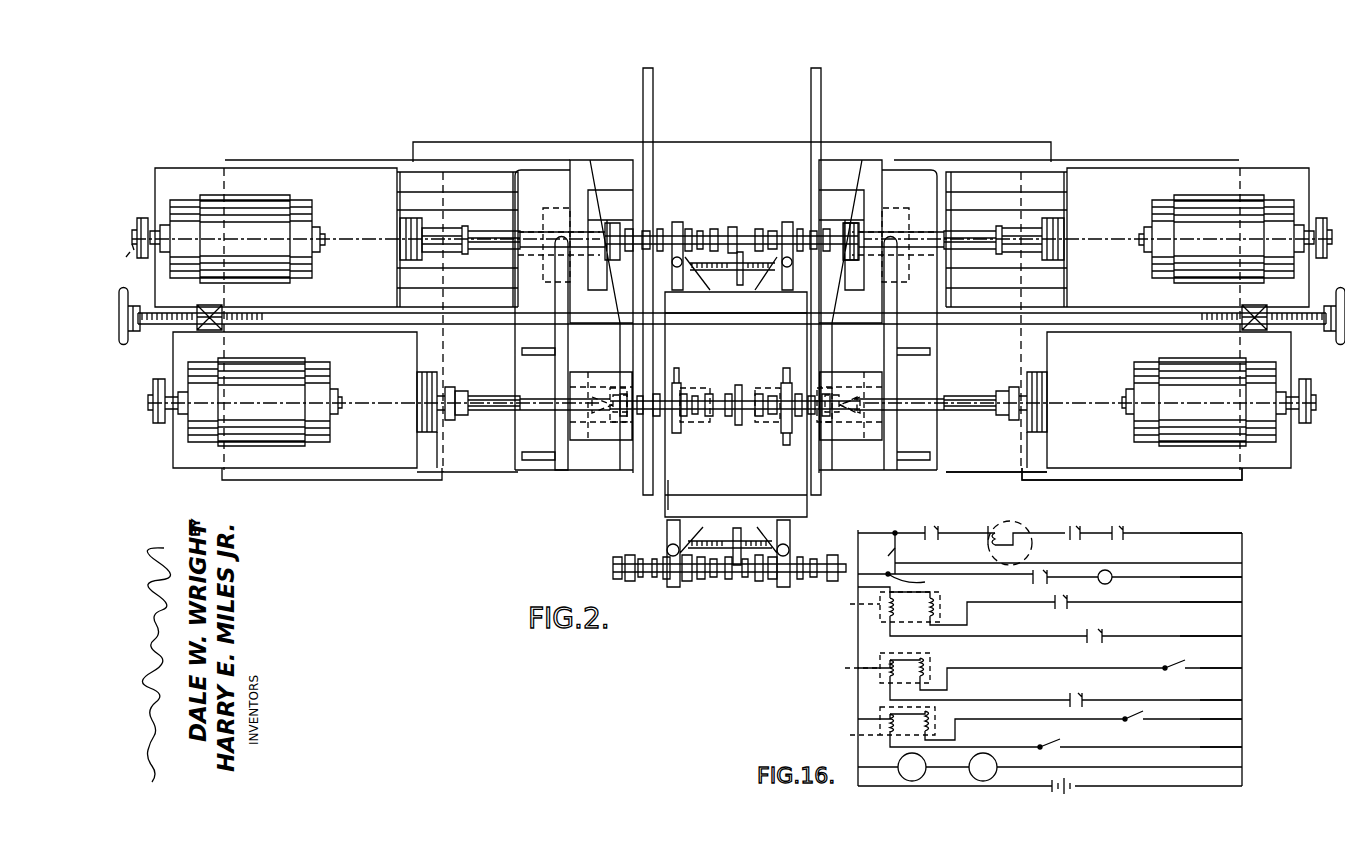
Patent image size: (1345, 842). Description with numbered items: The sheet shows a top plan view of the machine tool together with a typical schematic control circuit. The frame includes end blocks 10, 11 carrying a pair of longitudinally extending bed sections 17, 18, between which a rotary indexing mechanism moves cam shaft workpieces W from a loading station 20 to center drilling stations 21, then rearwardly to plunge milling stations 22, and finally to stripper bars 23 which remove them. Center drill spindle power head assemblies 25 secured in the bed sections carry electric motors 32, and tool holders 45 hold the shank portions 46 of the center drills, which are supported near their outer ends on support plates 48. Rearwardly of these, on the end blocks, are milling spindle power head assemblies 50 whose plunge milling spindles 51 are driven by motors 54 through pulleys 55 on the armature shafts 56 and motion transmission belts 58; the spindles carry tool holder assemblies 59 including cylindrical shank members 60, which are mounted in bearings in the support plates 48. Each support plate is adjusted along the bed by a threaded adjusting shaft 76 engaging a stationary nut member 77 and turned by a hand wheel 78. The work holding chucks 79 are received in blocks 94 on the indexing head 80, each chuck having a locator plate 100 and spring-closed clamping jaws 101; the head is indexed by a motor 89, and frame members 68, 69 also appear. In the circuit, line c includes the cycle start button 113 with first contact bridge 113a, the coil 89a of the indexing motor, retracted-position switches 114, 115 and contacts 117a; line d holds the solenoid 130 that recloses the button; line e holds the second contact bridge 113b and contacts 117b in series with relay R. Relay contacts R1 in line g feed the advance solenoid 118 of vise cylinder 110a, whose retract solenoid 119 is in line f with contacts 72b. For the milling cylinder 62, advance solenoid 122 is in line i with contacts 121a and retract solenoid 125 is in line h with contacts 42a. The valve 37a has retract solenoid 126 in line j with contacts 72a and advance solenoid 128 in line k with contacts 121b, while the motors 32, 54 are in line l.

In FIG. 2, the end block 10 is at (376, 480).
In FIG. 2, the end block 11 is at (1183, 478).
In FIG. 2, the bed section 17 is at (487, 474).
In FIG. 2, the bed section 18 is at (972, 470).
In FIG. 2, the loading station 20 is at (654, 542).
In FIG. 2, the center drilling station 21 is at (720, 427).
In FIG. 2, the plunge milling station 22 is at (672, 235).
In FIG. 2, the stripper bar 23 is at (652, 120).
In FIG. 2, the center drill spindle power head assembly 25 is at (380, 403).
In FIG. 2, the electric motor 32 is at (270, 401).
In FIG. 16, the valve 37a is at (874, 727).
In FIG. 16, the contacts of limit switch 42a is at (1202, 655).
In FIG. 2, the tool holder 45 is at (440, 392).
In FIG. 2, the shank portion 46 is at (500, 404).
In FIG. 2, the support plate 48 is at (562, 471).
In FIG. 2, the milling spindle power head assembly 50 is at (370, 239).
In FIG. 2, the plunge milling spindle 51 is at (405, 233).
In FIG. 2, the motor 54 is at (268, 239).
In FIG. 2, the pulley 55 is at (126, 258).
In FIG. 2, the armature shaft 56 is at (133, 250).
In FIG. 2, the motion transmission belt 58 is at (147, 218).
In FIG. 2, the tool holder assembly 59 is at (452, 227).
In FIG. 2, the cylindrical shank member 60 is at (574, 316).
In FIG. 16, the plunge milling spindle operating cylinder 62 is at (875, 668).
In FIG. 2, the frame member 68 is at (428, 197).
In FIG. 2, the frame member 69 is at (415, 175).
In FIG. 16, the contacts of switch 72a is at (1182, 710).
In FIG. 16, the contacts 72b is at (1075, 592).
In FIG. 2, the threaded adjusting shaft 76 is at (373, 325).
In FIG. 2, the stationary nut member 77 is at (212, 330).
In FIG. 2, the hand wheel 78 is at (123, 345).
In FIG. 2, the work holding chuck 79 is at (655, 587).
In FIG. 2, the indexing head 80 is at (690, 483).
In FIG. 16, the motor 89 is at (1028, 524).
In FIG. 16, the coil 89a is at (1000, 515).
In FIG. 2, the block 94 is at (748, 314).
In FIG. 2, the work contacting locator plate 100 is at (745, 390).
In FIG. 2, the work clamping jaw 101 is at (683, 236).
In FIG. 16, the vise cylinder 110a is at (877, 607).
In FIG. 16, the cycle start button 113 is at (893, 530).
In FIG. 16, the first contact bridge 113a is at (922, 530).
In FIG. 16, the second contact bridge 113b is at (945, 584).
In FIG. 16, the switch 114 is at (1078, 528).
In FIG. 16, the switch 115 is at (1122, 528).
In FIG. 16, the contacts of limit switch 117a is at (988, 532).
In FIG. 16, the contacts of limit switch 117b is at (1048, 572).
In FIG. 16, the advance solenoid 118 is at (888, 608).
In FIG. 16, the retract solenoid 119 is at (972, 608).
In FIG. 16, the contacts 121a is at (1085, 698).
In FIG. 16, the contacts 121b is at (1055, 743).
In FIG. 16, the advance solenoid 122 is at (885, 672).
In FIG. 16, the retract solenoid 125 is at (928, 670).
In FIG. 16, the retract solenoid 126 is at (938, 718).
In FIG. 16, the advance solenoid 128 is at (885, 722).
In FIG. 16, the solenoid 130 is at (893, 548).
In FIG. 16, the relay R is at (1170, 577).
In FIG. 16, the relay contacts R1 is at (1104, 634).
In FIG. 2, the workpiece W is at (740, 240).
In FIG. 16, the circuit line c is at (1200, 533).
In FIG. 16, the circuit line d is at (1192, 563).
In FIG. 16, the circuit line e is at (1232, 577).
In FIG. 16, the circuit line f is at (1235, 602).
In FIG. 16, the circuit line g is at (1235, 636).
In FIG. 16, the circuit line h is at (1235, 668).
In FIG. 16, the circuit line i is at (1235, 700).
In FIG. 16, the circuit line j is at (1235, 719).
In FIG. 16, the circuit line k is at (1235, 747).
In FIG. 16, the circuit line l is at (1235, 767).